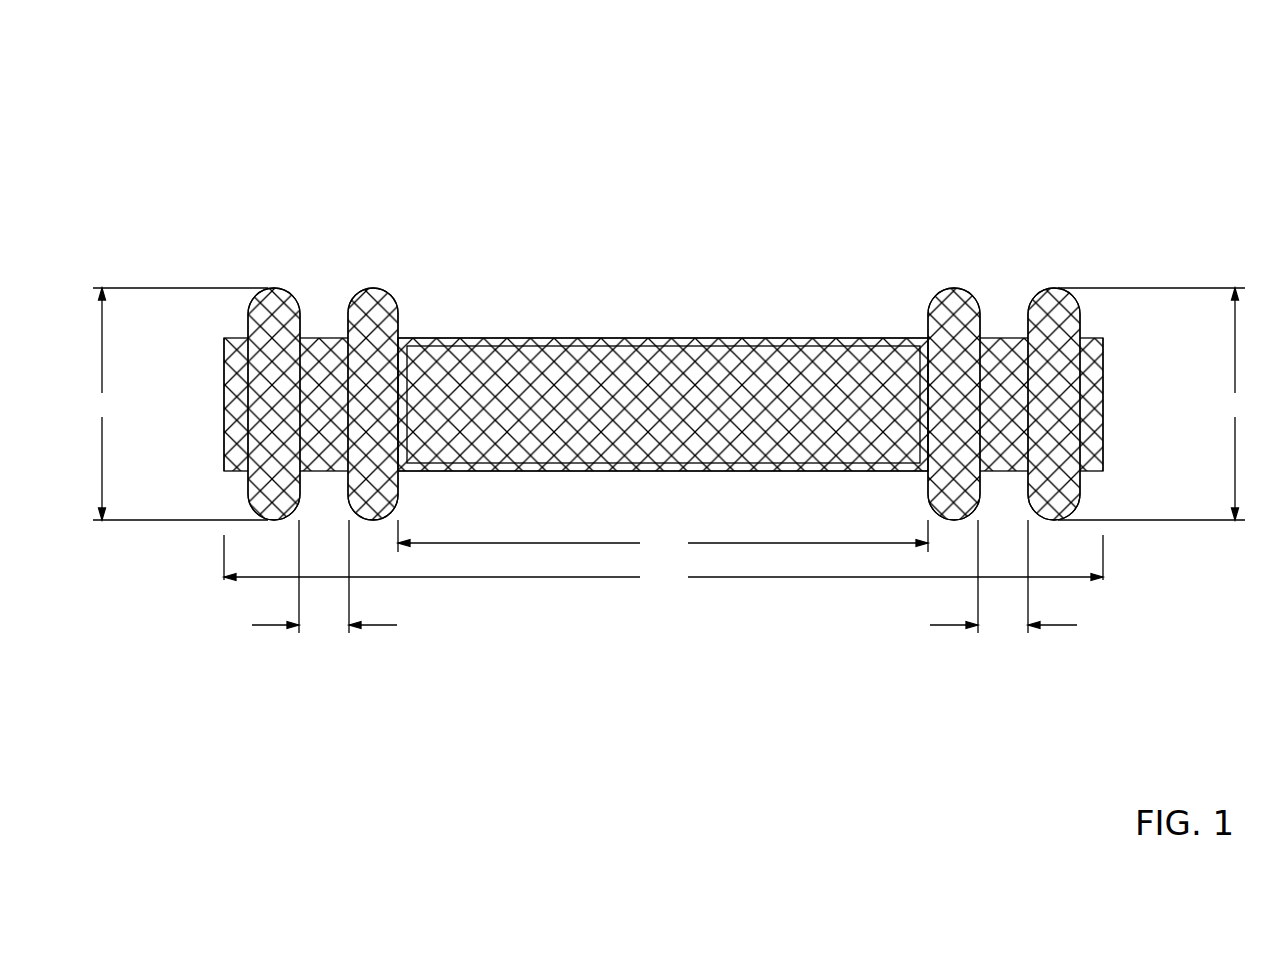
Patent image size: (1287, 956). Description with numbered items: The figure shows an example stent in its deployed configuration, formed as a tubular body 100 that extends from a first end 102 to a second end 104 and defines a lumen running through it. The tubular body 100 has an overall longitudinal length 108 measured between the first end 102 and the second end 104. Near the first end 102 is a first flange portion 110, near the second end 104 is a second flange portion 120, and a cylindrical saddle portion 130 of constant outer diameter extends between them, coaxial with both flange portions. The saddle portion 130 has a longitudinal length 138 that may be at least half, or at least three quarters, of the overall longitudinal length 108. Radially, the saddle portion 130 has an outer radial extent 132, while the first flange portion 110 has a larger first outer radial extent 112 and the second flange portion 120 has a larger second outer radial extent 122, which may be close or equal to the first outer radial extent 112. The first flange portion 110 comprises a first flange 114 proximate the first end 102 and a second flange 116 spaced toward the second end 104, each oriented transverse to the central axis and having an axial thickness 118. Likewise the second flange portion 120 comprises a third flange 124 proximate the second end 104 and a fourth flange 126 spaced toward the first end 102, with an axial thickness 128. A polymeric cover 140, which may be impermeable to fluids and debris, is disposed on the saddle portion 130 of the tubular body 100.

The tubular body 100 is at (1050, 86).
The first end 102 is at (222, 476).
The second end 104 is at (1106, 476).
The overall longitudinal length 108 is at (663, 563).
The first flange portion 110 is at (325, 422).
The first outer radial extent 112 is at (174, 404).
The first flange 114 is at (272, 530).
The second flange 116 is at (370, 530).
The flange thickness 118 is at (301, 579).
The second flange portion 120 is at (1004, 422).
The second outer radial extent 122 is at (1158, 404).
The third flange 124 is at (1050, 530).
The fourth flange 126 is at (952, 530).
The flange thickness 128 is at (1026, 579).
The saddle portion 130 is at (925, 278).
The outer radial extent 132 is at (798, 522).
The longitudinal length 138 is at (663, 539).
The polymeric cover 140 is at (663, 340).